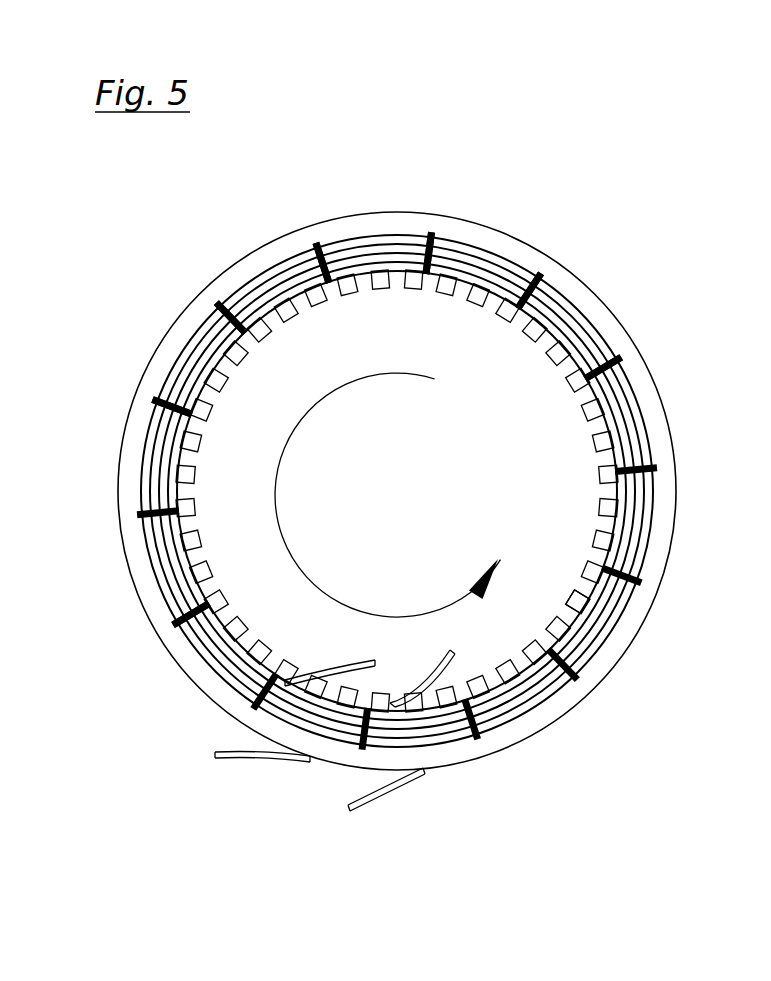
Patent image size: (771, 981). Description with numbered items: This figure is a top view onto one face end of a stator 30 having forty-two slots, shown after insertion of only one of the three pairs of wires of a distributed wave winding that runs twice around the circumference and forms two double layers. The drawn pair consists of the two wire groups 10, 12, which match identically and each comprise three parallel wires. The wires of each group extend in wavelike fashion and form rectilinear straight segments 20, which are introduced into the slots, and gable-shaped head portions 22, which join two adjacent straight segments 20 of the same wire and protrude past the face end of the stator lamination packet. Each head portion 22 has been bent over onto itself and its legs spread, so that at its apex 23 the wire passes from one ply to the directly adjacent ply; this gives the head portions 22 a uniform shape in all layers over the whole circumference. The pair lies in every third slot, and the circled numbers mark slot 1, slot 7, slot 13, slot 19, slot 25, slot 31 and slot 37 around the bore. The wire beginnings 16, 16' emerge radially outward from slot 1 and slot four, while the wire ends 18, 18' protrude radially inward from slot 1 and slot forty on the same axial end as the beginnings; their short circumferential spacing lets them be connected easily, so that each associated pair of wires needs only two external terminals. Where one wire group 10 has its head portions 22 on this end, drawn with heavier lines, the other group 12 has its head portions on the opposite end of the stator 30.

The slot 1 is at (405, 503).
The slot 7 is at (428, 532).
The wire group 10 is at (560, 708).
The wire group 12 is at (632, 611).
The slot 13 is at (453, 490).
The wire beginning 16 is at (420, 817).
The wire beginning 16' is at (249, 800).
The wire end 18 is at (446, 674).
The wire end 18' is at (327, 651).
The slot 19 is at (425, 453).
The straight segment 20 is at (620, 365).
The head portion 22 is at (242, 293).
The apex 23 is at (267, 272).
The slot 25 is at (382, 447).
The stator 30 is at (667, 563).
The slot 31 is at (348, 477).
The slot 37 is at (355, 518).